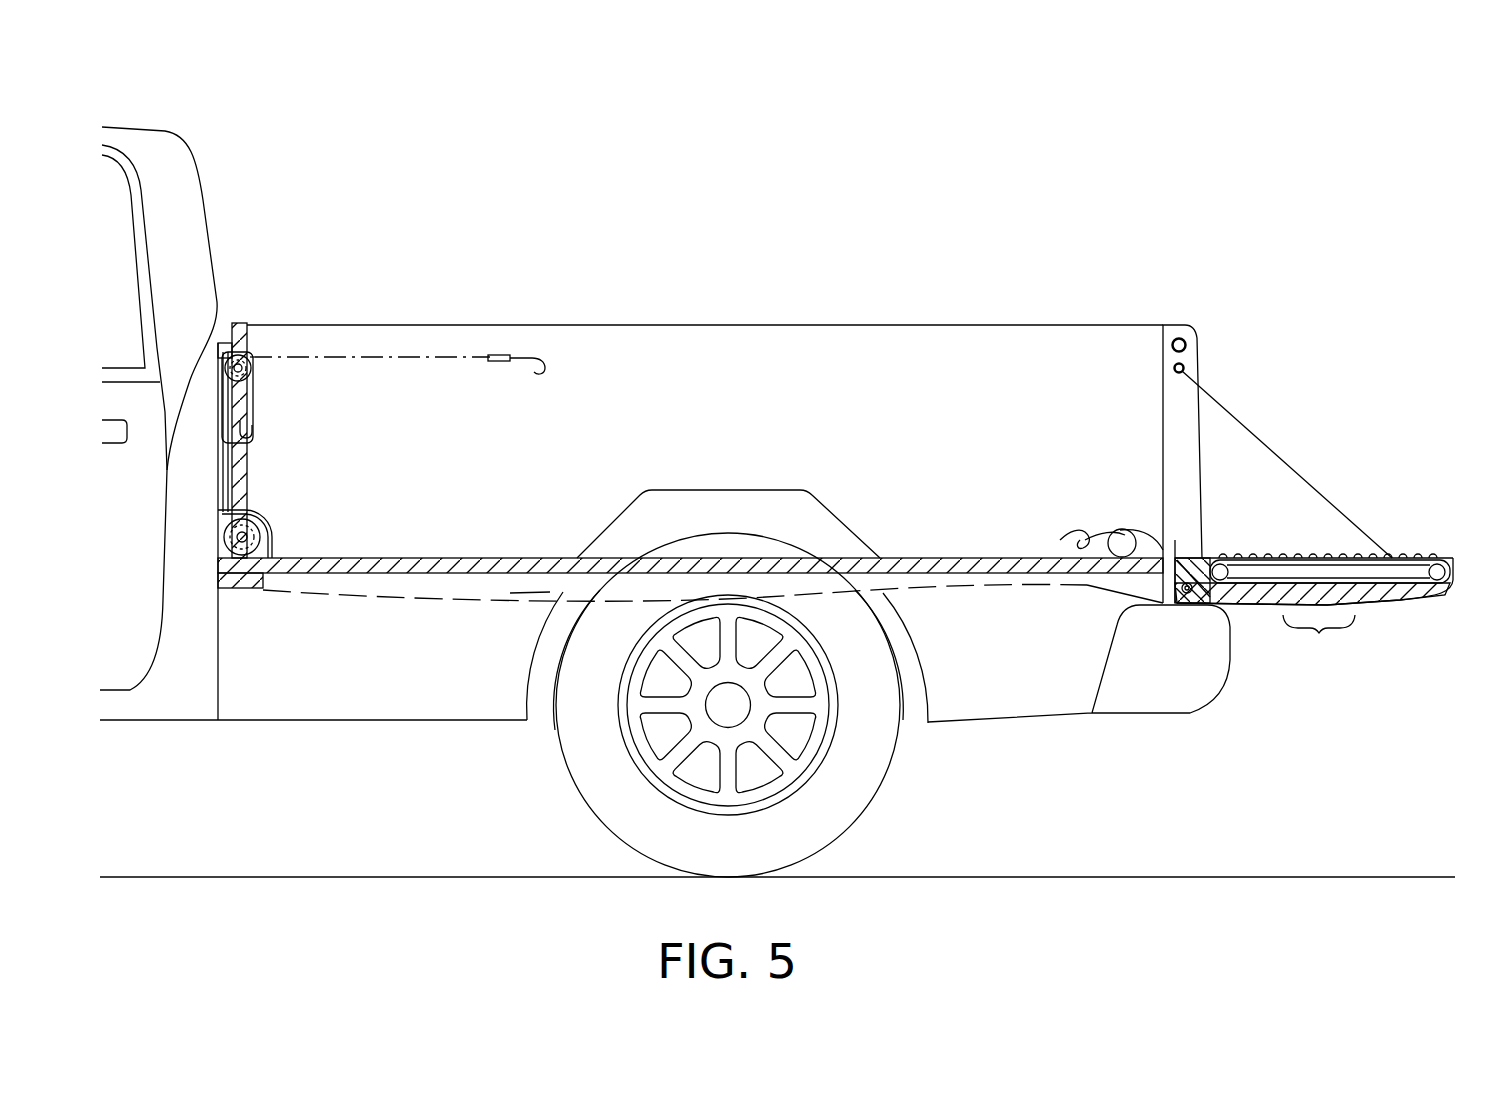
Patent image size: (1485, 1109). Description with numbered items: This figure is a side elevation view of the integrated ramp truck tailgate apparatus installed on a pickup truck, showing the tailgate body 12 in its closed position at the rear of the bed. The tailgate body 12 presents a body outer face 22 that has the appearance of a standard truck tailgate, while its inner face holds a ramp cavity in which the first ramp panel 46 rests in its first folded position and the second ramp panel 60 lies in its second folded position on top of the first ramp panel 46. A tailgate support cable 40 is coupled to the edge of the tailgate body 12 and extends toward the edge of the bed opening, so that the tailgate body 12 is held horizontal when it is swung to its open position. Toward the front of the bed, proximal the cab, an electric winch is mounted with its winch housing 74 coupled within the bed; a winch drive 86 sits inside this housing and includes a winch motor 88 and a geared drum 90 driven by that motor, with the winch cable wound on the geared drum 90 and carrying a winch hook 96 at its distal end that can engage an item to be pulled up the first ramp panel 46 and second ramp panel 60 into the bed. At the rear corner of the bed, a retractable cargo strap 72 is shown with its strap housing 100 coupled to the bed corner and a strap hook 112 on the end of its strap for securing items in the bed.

The tailgate body 12 is at (1407, 603).
The body outer face 22 is at (1318, 634).
The tailgate support cables 40 is at (1239, 424).
The first ramp panel 46 is at (1399, 573).
The second ramp panel 60 is at (1388, 558).
The retractable cargo straps 72 is at (1107, 500).
The winch housing 74 is at (253, 373).
The winch drive 86 is at (241, 560).
The winch motor 88 is at (230, 517).
The geared drum 90 is at (237, 327).
The winch hook 96 is at (253, 433).
The strap housing 100 is at (1147, 538).
The strap hook 112 is at (1084, 538).